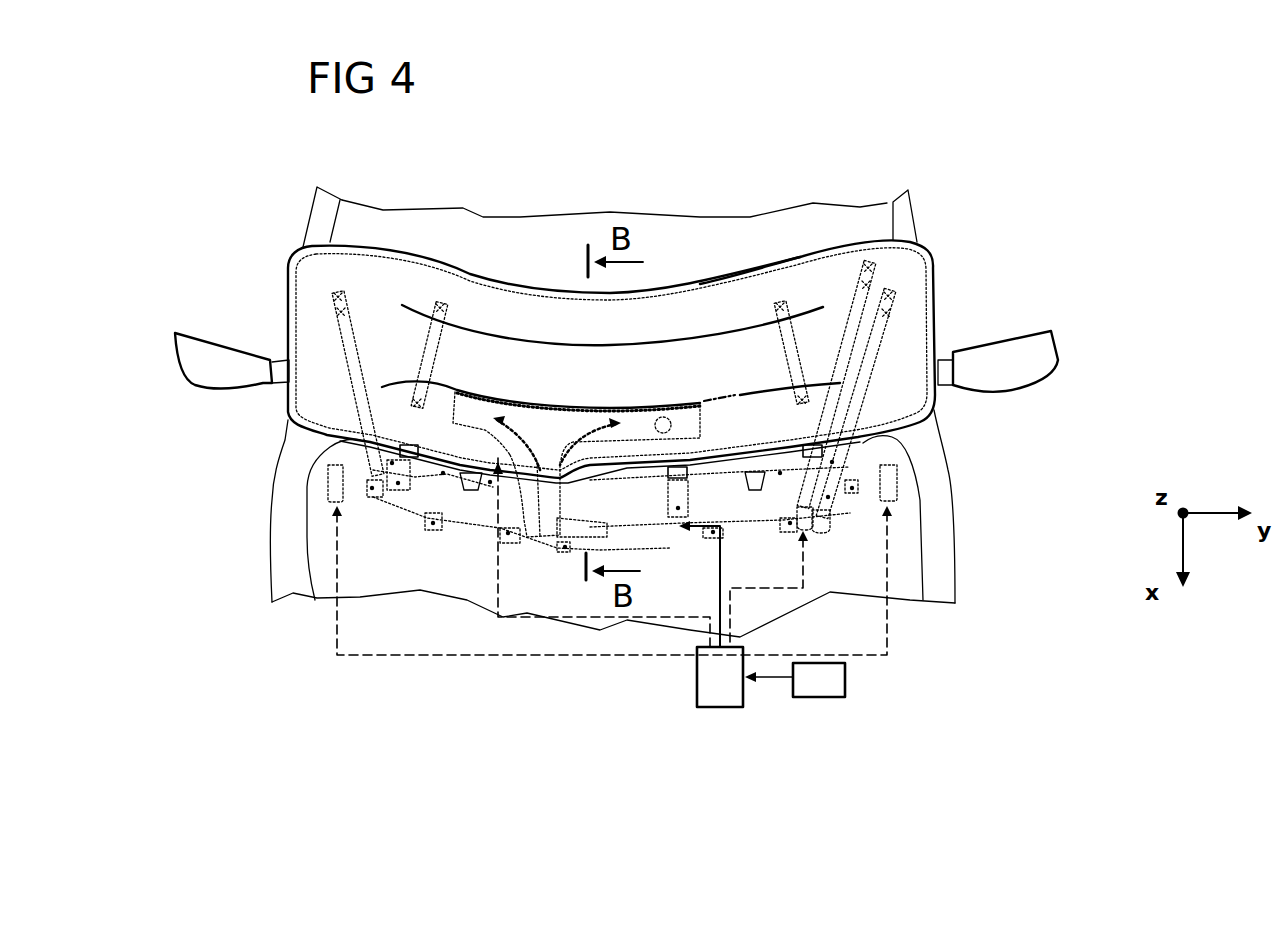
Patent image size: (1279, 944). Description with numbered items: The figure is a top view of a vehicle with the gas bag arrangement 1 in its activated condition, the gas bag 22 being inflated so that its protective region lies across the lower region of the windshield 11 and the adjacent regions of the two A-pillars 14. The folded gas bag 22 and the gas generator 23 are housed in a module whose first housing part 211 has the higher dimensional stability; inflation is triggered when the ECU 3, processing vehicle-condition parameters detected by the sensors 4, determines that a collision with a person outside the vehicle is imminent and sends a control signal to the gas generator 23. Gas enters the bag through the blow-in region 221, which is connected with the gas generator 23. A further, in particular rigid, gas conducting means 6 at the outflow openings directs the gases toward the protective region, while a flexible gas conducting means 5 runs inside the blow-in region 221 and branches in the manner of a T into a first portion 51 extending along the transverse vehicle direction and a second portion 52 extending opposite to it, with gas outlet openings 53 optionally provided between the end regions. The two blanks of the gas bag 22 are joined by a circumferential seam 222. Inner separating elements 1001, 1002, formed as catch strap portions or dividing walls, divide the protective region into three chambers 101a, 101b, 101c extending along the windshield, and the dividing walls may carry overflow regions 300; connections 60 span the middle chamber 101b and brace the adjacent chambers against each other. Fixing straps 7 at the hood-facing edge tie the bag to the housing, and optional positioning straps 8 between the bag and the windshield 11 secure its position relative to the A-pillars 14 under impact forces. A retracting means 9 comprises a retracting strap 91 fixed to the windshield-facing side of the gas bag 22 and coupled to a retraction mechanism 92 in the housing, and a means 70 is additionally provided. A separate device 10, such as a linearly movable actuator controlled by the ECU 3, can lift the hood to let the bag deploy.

The gas bag arrangement 1 is at (958, 325).
The ECU 3 is at (718, 698).
The sensors 4 is at (827, 687).
The flexible gas conducting means 5 is at (693, 430).
The further gas conducting means 6 is at (553, 527).
The fixing straps 7 is at (403, 487).
The positioning straps 8 is at (348, 353).
The retracting means 9 is at (840, 522).
The separate device for lifting the hood 10 is at (332, 490).
The windshield 11 is at (875, 218).
The A-pillars 14 is at (320, 223).
The gas bag 22 is at (922, 403).
The gas generator 23 is at (667, 520).
The first portion 51 is at (470, 407).
The second portion 52 is at (642, 420).
The gas outlet openings 53 is at (667, 423).
The strap-like or single-layer connections 60 is at (428, 343).
The means 70 is at (498, 470).
The retracting strap 91 is at (853, 313).
The retraction mechanism 92 is at (813, 532).
The chamber 101a is at (447, 436).
The middle chamber 101b is at (410, 356).
The chamber 101c is at (523, 322).
The first housing part 211 is at (472, 517).
The blow-in region 221 is at (563, 503).
The circumferential seam 222 is at (745, 277).
The overflow regions 300 is at (723, 390).
The separating element 1001 is at (533, 402).
The separating element 1002 is at (573, 343).